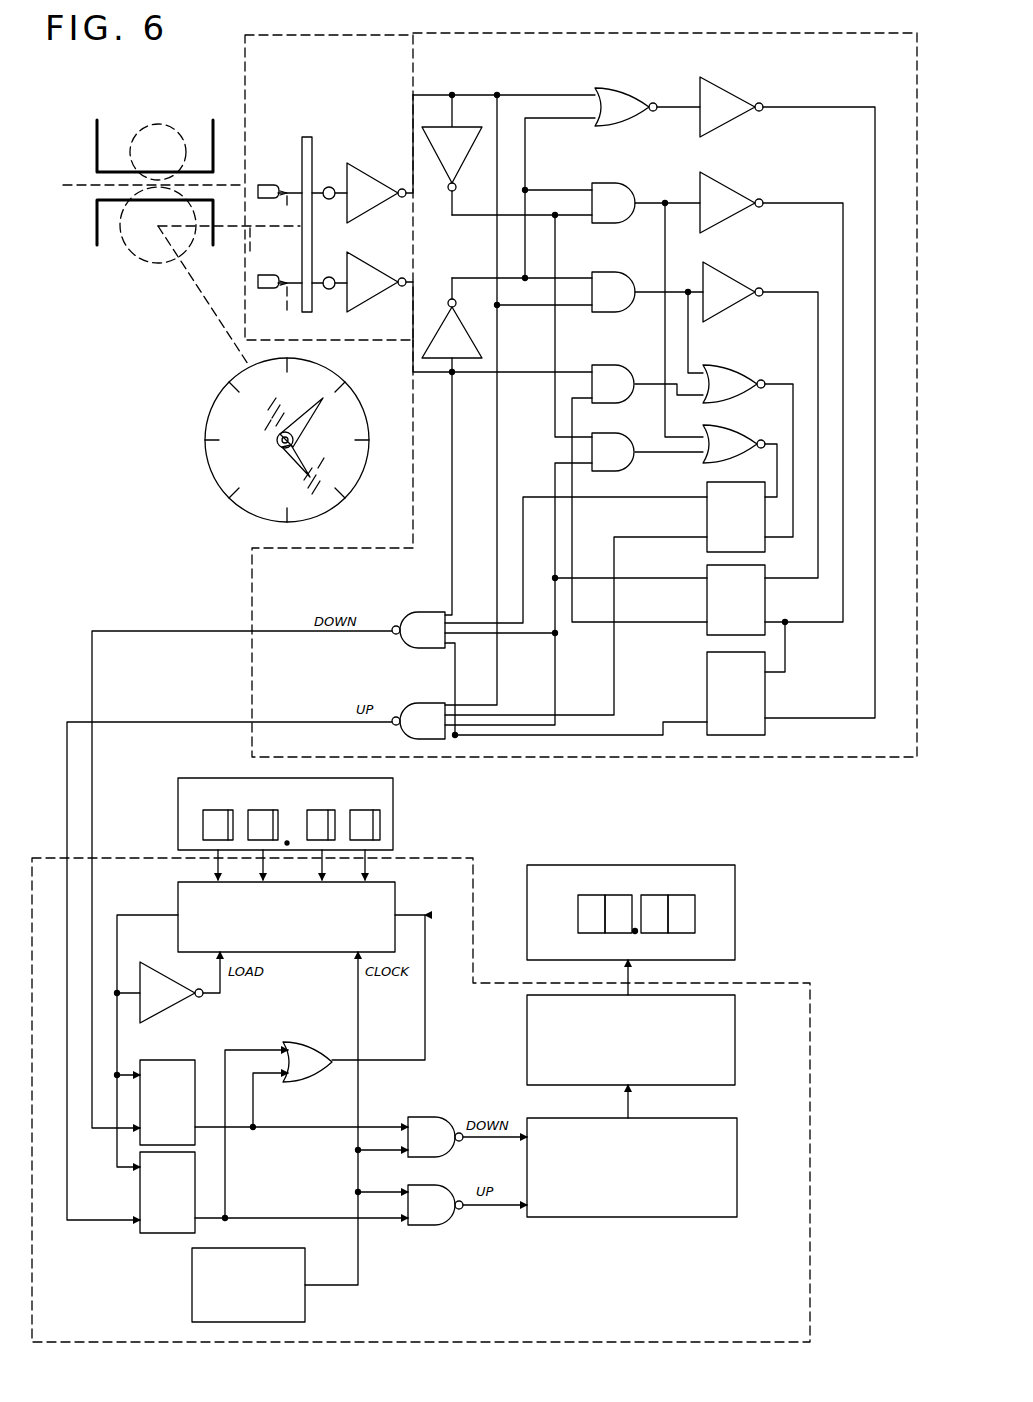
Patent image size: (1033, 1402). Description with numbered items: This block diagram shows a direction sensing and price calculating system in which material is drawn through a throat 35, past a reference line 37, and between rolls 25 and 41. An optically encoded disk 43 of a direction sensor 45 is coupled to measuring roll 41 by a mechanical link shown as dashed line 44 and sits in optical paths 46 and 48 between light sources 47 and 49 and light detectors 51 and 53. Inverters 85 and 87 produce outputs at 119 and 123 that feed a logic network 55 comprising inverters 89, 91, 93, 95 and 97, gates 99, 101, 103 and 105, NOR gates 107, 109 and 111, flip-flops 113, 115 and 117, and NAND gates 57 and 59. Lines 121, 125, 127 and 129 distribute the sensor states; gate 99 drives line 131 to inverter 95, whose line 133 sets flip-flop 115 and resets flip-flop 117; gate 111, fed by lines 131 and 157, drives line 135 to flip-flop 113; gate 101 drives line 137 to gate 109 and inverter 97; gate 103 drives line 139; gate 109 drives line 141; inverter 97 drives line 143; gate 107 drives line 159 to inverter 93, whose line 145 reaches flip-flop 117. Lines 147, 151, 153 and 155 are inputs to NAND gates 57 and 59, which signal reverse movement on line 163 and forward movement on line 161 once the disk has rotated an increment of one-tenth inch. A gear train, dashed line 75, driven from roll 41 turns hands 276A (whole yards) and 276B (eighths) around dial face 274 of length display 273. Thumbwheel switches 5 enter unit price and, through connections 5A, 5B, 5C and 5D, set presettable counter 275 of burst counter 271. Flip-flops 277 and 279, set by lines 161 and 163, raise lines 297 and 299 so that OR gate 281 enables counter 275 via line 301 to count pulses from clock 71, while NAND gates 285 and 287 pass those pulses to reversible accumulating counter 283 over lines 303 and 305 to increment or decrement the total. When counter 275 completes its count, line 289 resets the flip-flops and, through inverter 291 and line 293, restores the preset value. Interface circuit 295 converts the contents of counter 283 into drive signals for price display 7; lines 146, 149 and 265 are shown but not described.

The price per yard thumbwheel switches 5 is at (205, 810).
The preset price digit line 5A is at (213, 862).
The preset price digit line 5B is at (263, 862).
The preset price digit line 5C is at (322, 862).
The preset price digit line 5D is at (365, 862).
The price display 7 is at (660, 865).
The roll 25 is at (150, 125).
The throat 35 is at (95, 178).
The reference line 37 is at (203, 200).
The measuring roll 41 is at (140, 262).
The optically encoded disk 43 is at (310, 145).
The dashed line 44 is at (229, 243).
The direction sensor 45 is at (355, 33).
The optical path 46 is at (281, 206).
The light source 47 is at (270, 184).
The optical path 48 is at (274, 303).
The light source 49 is at (256, 282).
The light detector 51 is at (329, 187).
The light detector 53 is at (329, 289).
The logic network 55 is at (600, 33).
The NAND gate 57 is at (418, 630).
The NAND gate 59 is at (418, 721).
The clock 71 is at (305, 1310).
The dashed line 75 is at (212, 328).
The inverter 85 is at (380, 159).
The inverter 87 is at (469, 312).
The inverter 89 is at (452, 155).
The inverter 91 is at (452, 325).
The inverter 93 is at (731, 107).
The inverter 95 is at (731, 202).
The inverter 97 is at (733, 292).
The NAND gate 99 is at (646, 203).
The NAND gate 101 is at (647, 292).
The NAND gate 103 is at (647, 384).
The NAND gate 105 is at (647, 452).
The NOR gate 107 is at (647, 107).
The NOR gate 109 is at (734, 384).
The NOR gate 111 is at (734, 444).
The flip-flop 113 is at (736, 517).
The flip-flop 115 is at (736, 600).
The flip-flop 117 is at (736, 693).
The inverter 85 output 119 is at (452, 95).
The line 121 is at (580, 80).
The inverter 87 output 123 is at (425, 378).
The line 125 is at (572, 363).
The line 127 is at (580, 125).
The line 129 is at (578, 425).
The line 131 is at (660, 190).
The line 133 is at (780, 203).
The line 135 is at (777, 480).
The line 137 is at (688, 280).
The line 139 is at (677, 400).
The line 141 is at (793, 525).
The line 143 is at (812, 573).
The line 145 is at (795, 110).
The signal line 146 is at (795, 718).
The line 147 is at (685, 497).
The signal line 149 is at (572, 398).
The line 151 is at (575, 475).
The line 153 is at (430, 665).
The line 155 is at (685, 537).
The line 157 is at (690, 460).
The line 159 is at (672, 107).
The line 161 is at (212, 722).
The line 163 is at (190, 631).
The display drive line 265 is at (635, 990).
The burst counter 271 is at (810, 1095).
The length display 273 is at (205, 463).
The dial face 274 is at (252, 428).
The presettable counter 275 is at (395, 895).
The indicator hand 276A is at (323, 398).
The indicator hand 276B is at (295, 462).
The flip-flop 277 is at (167, 1192).
The flip-flop 279 is at (167, 1102).
The OR gate 281 is at (307, 1062).
The reversible accumulating counter 283 is at (675, 1217).
The NAND gate 285 is at (435, 1205).
The NAND gate 287 is at (435, 1137).
The line 289 is at (117, 915).
The inverter 291 is at (171, 992).
The line 293 is at (222, 995).
The interface circuit 295 is at (735, 1050).
The line 297 is at (225, 1205).
The line 299 is at (253, 1118).
The line 301 is at (425, 1040).
The input line 303 is at (492, 1207).
The input line 305 is at (490, 1140).